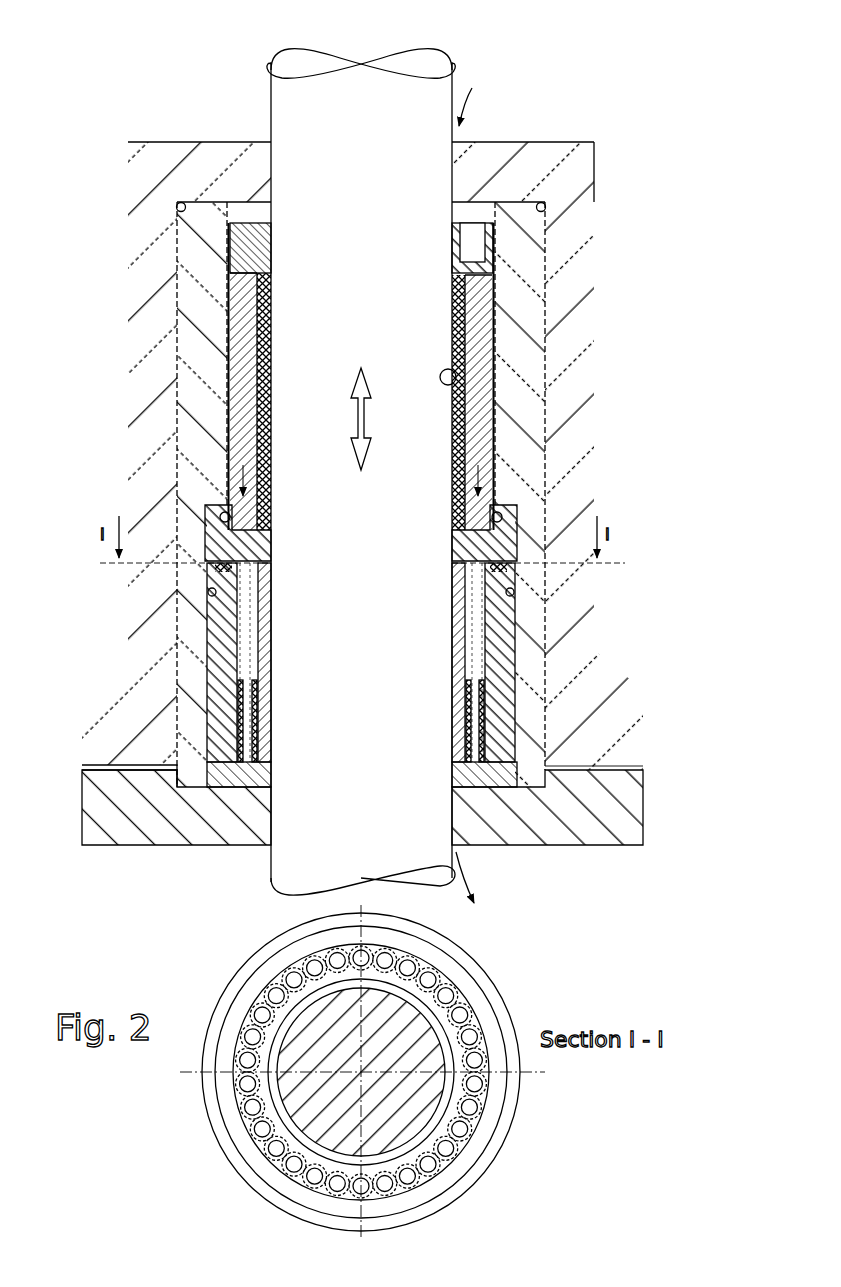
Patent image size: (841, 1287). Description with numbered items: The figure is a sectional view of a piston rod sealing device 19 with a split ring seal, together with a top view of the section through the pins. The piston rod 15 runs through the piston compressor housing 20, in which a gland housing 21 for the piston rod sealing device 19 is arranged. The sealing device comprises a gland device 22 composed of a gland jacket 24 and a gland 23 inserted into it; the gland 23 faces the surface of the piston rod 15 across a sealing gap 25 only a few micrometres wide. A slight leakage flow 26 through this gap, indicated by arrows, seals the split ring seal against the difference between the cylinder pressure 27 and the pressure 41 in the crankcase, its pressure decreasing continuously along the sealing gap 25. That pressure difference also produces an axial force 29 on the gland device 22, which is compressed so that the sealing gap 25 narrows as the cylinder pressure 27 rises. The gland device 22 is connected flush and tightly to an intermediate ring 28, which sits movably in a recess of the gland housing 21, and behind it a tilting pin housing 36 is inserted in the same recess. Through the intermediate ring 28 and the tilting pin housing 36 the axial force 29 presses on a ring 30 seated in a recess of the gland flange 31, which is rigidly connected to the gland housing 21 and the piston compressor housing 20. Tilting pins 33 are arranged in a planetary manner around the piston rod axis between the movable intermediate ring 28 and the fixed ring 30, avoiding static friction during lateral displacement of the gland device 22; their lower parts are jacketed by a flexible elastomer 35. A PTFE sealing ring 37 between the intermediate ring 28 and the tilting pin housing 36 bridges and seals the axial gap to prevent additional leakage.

The piston rod 15 is at (425, 158).
The piston rod sealing device 19 is at (560, 417).
The piston compressor housing 20 is at (606, 743).
The gland housing 21 is at (531, 222).
The gland device 22 is at (495, 302).
The gland 23 is at (460, 355).
The gland jacket 24 is at (483, 328).
The sealing gap 25 is at (456, 378).
The leakage flow 26 is at (481, 488).
The cylinder pressure 27 is at (502, 118).
The intermediate ring 28 is at (488, 545).
The axial force 29 is at (492, 473).
The ring 30 is at (502, 772).
The gland flange 31 is at (606, 807).
The tilting pins 33 is at (475, 617).
The flexible elastomer 35 is at (485, 695).
The tilting pin housing 36 is at (502, 708).
The sealing ring 37 is at (510, 563).
The pressure in the crankcase 41 is at (500, 869).